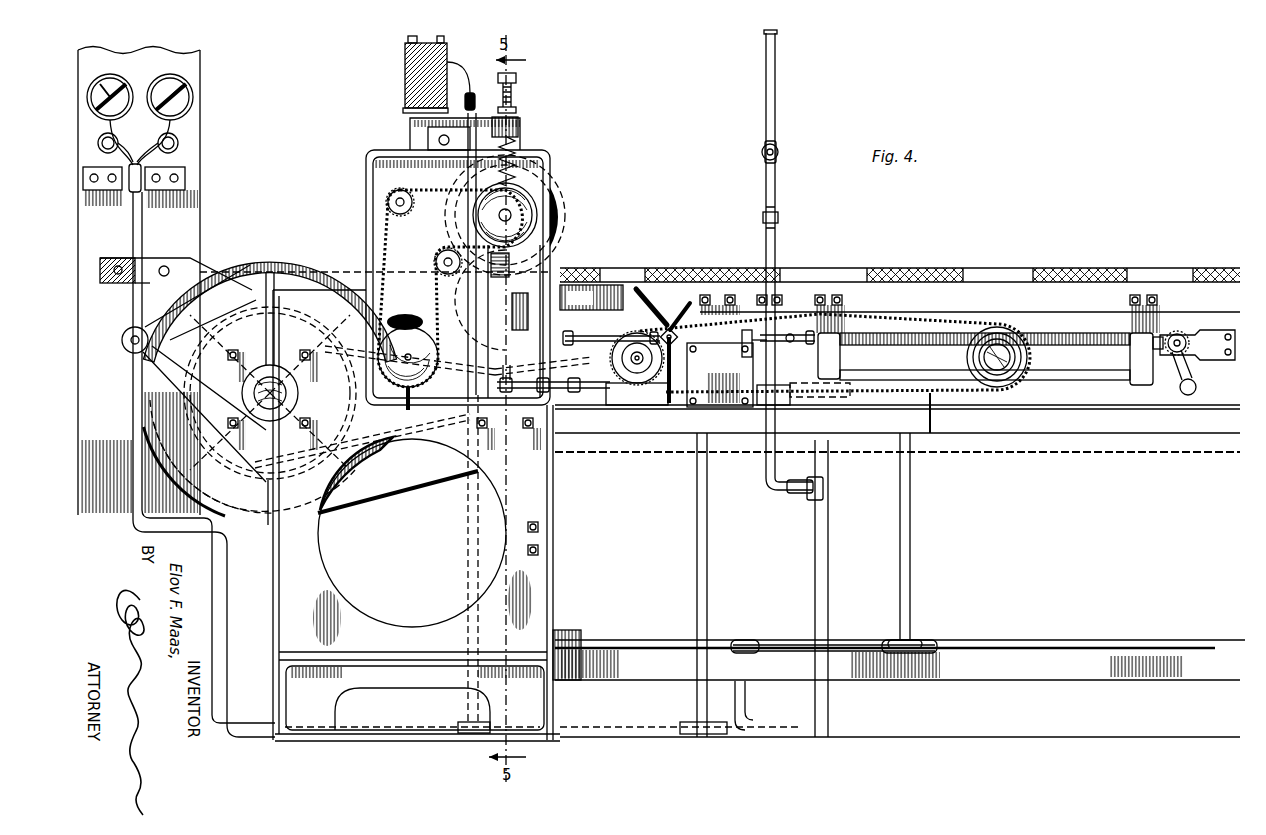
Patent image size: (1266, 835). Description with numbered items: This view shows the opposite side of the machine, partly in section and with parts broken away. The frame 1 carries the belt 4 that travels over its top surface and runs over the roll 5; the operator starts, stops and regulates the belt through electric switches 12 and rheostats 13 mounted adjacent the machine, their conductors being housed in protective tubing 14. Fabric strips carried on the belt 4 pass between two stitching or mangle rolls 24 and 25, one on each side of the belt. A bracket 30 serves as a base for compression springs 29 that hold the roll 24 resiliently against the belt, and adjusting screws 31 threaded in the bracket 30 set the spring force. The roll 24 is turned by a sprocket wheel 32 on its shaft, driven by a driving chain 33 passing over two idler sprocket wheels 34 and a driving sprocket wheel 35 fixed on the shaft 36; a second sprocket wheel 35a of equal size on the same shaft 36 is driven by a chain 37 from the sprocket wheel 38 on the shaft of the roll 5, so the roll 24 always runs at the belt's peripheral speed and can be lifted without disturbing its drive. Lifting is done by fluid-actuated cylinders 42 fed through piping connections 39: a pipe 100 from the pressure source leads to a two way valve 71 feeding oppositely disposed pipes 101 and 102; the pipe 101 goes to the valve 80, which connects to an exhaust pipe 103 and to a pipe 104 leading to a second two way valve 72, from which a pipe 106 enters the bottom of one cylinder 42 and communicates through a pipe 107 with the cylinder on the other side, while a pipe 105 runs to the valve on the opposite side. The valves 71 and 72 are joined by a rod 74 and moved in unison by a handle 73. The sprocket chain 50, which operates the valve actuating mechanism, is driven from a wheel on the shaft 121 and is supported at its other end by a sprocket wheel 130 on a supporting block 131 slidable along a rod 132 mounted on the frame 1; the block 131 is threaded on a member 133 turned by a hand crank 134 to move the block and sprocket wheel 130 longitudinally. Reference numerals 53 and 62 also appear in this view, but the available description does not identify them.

The frame 1 is at (320, 708).
The belt 4 is at (373, 490).
The roll 5 is at (378, 463).
The electric switches 12 is at (186, 180).
The rheostats 13 is at (188, 94).
The protective tubing 14 is at (250, 740).
The stitching or mangle roll 24 is at (553, 219).
The stitching or mangle roll 25 is at (591, 297).
The compression springs 29 is at (520, 143).
The bracket 30 is at (518, 118).
The adjusting screws 31 is at (516, 80).
The sprocket wheel 32 is at (527, 205).
The driving chain 33 is at (385, 229).
The idler sprocket wheels 34 is at (388, 200).
The driving sprocket wheel 35 is at (404, 398).
The second sprocket wheel 35a is at (388, 333).
The shaft 36 is at (392, 352).
The chain 37 is at (432, 397).
The sprocket wheel 38 is at (200, 328).
The piping connections 39 is at (776, 68).
The cylinders 42 is at (523, 287).
The sprocket chain 50 is at (905, 333).
The support rod 53 is at (930, 395).
The motor 62 is at (405, 70).
The two way valve 71 is at (772, 345).
The two way valve 72 is at (668, 330).
The handle 73 is at (638, 287).
The rod 74 is at (674, 340).
The valve 80 is at (748, 373).
The pipe 100 is at (766, 114).
The pipe 101 is at (747, 350).
The pipe 102 is at (790, 333).
The exhaust pipe 103 is at (770, 486).
The pipe 104 is at (720, 375).
The pipe 105 is at (598, 336).
The pipe 106 is at (612, 358).
The pipe 107 is at (600, 362).
The shaft 121 is at (638, 363).
The sprocket wheel 130 is at (1025, 338).
The supporting block 131 is at (1022, 372).
The rod 132 is at (1082, 376).
The member 133 is at (1098, 345).
The hand crank 134 is at (1193, 378).